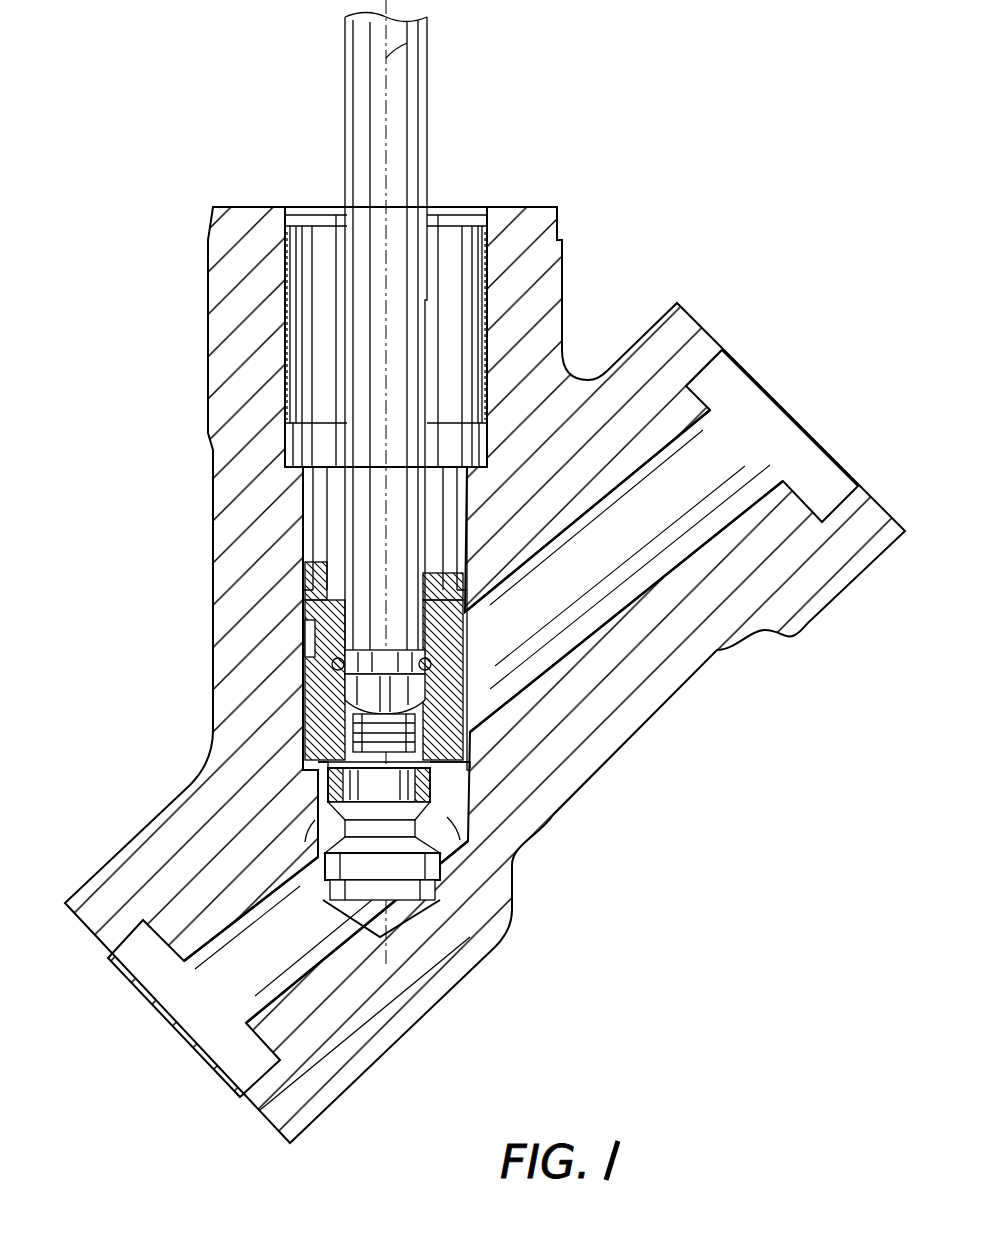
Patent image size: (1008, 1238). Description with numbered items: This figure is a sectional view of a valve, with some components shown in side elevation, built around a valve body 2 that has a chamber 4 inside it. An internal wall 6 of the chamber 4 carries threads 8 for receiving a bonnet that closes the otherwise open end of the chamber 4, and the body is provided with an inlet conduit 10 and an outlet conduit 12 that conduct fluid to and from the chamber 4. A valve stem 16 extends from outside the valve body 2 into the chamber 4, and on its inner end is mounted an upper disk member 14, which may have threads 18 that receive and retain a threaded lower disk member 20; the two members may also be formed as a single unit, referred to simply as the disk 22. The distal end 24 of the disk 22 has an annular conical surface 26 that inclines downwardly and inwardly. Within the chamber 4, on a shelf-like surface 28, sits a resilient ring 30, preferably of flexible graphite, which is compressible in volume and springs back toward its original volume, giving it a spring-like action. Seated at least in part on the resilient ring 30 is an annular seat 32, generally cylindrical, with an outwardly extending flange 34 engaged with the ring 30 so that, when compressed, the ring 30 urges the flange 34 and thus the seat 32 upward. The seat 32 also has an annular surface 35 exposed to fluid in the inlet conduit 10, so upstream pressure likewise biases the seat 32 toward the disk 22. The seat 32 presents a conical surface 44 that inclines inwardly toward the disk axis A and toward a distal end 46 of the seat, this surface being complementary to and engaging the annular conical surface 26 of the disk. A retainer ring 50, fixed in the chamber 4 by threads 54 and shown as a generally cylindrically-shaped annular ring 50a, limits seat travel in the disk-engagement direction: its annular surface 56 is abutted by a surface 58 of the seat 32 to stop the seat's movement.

The disk axis A is at (425, 37).
The valve body 2 is at (213, 545).
The chamber 4 is at (303, 483).
The internal wall 6 is at (313, 537).
The threads 8 is at (290, 307).
The inlet conduit 10 is at (308, 987).
The outlet conduit 12 is at (580, 517).
The upper disk member 14 is at (310, 653).
The valve stem 16 is at (413, 180).
The threads 18 is at (350, 713).
The lower disk member 20 is at (320, 787).
The disk 22 is at (465, 646).
The distal end 24 is at (377, 855).
The annular conical surface 26 is at (460, 843).
The shelf-like surface 28 is at (462, 828).
The resilient ring 30 is at (468, 840).
The annular seat 32 is at (468, 812).
The outwardly extending flange 34 is at (340, 830).
The annular surface 35 is at (437, 900).
The conical surface 44 is at (417, 790).
The distal end 46 is at (365, 920).
The retainer ring 50 is at (466, 800).
The cylindrically-shaped annular ring 50a is at (462, 782).
The threads 54 is at (300, 773).
The annular surface 56 is at (330, 800).
The surface 58 is at (347, 783).